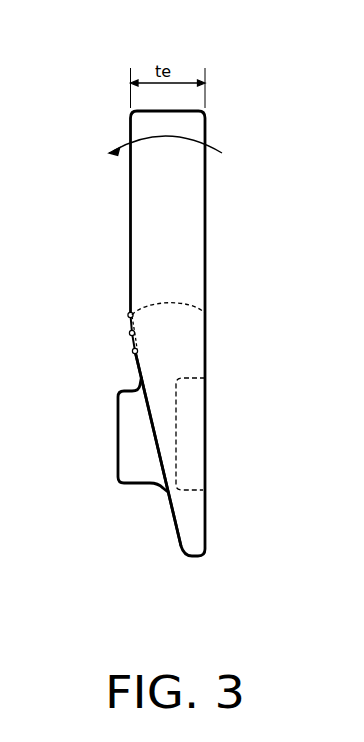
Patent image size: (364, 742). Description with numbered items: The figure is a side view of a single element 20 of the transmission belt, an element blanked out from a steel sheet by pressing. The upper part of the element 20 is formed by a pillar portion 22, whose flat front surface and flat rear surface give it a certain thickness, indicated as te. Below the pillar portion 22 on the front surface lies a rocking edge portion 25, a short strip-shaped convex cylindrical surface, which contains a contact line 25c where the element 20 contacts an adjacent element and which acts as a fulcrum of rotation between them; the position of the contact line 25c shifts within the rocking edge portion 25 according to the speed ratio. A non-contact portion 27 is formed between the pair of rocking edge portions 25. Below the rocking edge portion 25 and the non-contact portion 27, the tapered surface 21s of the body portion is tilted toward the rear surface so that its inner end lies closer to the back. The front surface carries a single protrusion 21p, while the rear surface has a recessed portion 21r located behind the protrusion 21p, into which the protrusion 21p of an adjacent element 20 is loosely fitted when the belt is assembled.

The element 20 is at (171, 324).
The pillar portion 22 is at (143, 177).
The rocking edge portion 25 is at (87, 346).
The contact line 25c is at (129, 334).
The non-contact portion 27 is at (205, 313).
The recessed portion 21r is at (205, 434).
The protrusion 21p is at (124, 461).
The tapered surface 21s is at (168, 512).